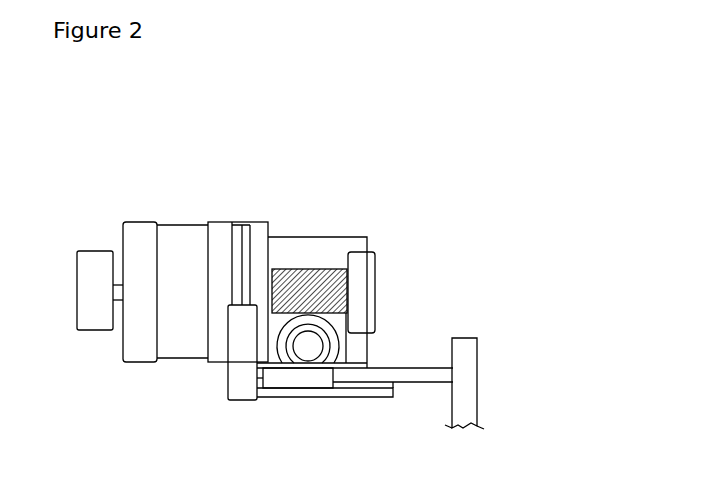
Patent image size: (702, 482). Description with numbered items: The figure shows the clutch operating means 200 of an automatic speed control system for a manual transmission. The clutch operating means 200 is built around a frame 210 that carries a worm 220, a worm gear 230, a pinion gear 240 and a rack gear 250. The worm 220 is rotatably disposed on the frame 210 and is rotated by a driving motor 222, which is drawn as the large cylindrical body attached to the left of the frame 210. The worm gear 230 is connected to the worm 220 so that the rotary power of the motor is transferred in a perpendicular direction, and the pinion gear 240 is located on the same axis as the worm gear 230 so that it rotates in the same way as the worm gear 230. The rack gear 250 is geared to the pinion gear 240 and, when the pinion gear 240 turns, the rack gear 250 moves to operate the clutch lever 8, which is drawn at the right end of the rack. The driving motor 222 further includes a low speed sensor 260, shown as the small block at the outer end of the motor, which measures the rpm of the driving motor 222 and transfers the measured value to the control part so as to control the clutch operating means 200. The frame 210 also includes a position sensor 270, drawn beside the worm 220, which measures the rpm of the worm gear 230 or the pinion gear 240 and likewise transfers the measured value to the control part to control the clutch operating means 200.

The clutch operating means 200 is at (316, 146).
The frame 210 is at (297, 246).
The worm 220 is at (328, 258).
The driving motor 222 is at (192, 232).
The worm gear 230 is at (340, 345).
The pinion gear 240 is at (312, 349).
The rack gear 250 is at (278, 387).
The low speed sensor 260 is at (91, 262).
The position sensor 270 is at (378, 268).
The clutch lever 8 is at (465, 347).